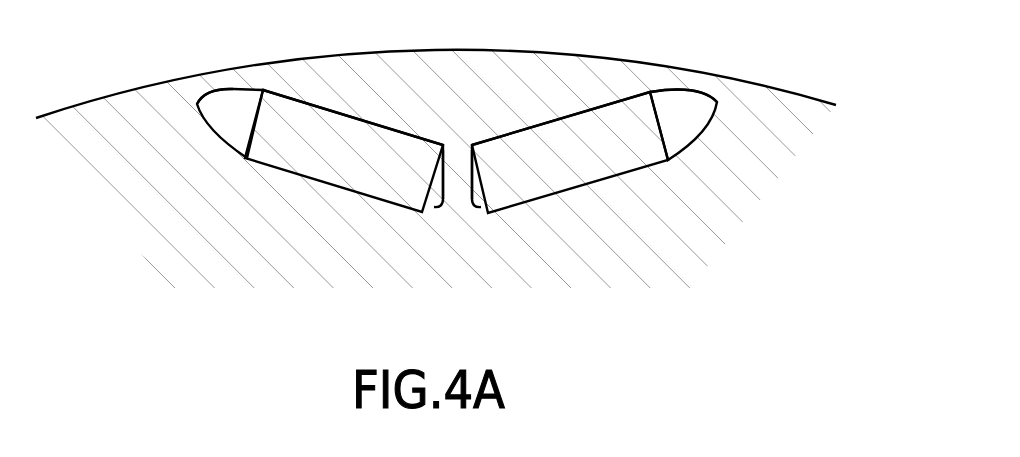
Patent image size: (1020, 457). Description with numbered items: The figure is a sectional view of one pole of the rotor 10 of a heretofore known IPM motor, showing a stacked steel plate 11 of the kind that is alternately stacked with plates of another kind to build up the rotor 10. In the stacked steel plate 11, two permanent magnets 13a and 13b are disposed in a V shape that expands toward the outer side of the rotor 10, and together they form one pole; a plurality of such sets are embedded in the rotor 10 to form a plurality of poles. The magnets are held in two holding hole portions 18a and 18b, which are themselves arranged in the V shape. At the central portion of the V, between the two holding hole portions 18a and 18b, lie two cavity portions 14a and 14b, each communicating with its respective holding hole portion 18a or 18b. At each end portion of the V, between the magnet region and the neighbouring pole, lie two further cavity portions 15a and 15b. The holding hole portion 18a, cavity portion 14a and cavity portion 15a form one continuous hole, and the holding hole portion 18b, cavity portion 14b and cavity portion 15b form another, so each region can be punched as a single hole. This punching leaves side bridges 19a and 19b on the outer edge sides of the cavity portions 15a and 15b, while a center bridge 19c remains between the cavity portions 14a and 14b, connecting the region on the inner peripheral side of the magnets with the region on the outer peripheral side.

The rotor 10 is at (838, 74).
The stacked steel plate 11 is at (92, 140).
The permanent magnet 13a is at (376, 140).
The permanent magnet 13b is at (555, 145).
The cavity portion 14a is at (437, 213).
The cavity portion 14b is at (477, 213).
The cavity portion 15a is at (237, 107).
The cavity portion 15b is at (678, 105).
The holding hole portion 18a is at (323, 110).
The holding hole portion 18b is at (585, 110).
The side bridge 19a is at (190, 87).
The side bridge 19b is at (723, 81).
The center bridge 19c is at (457, 210).